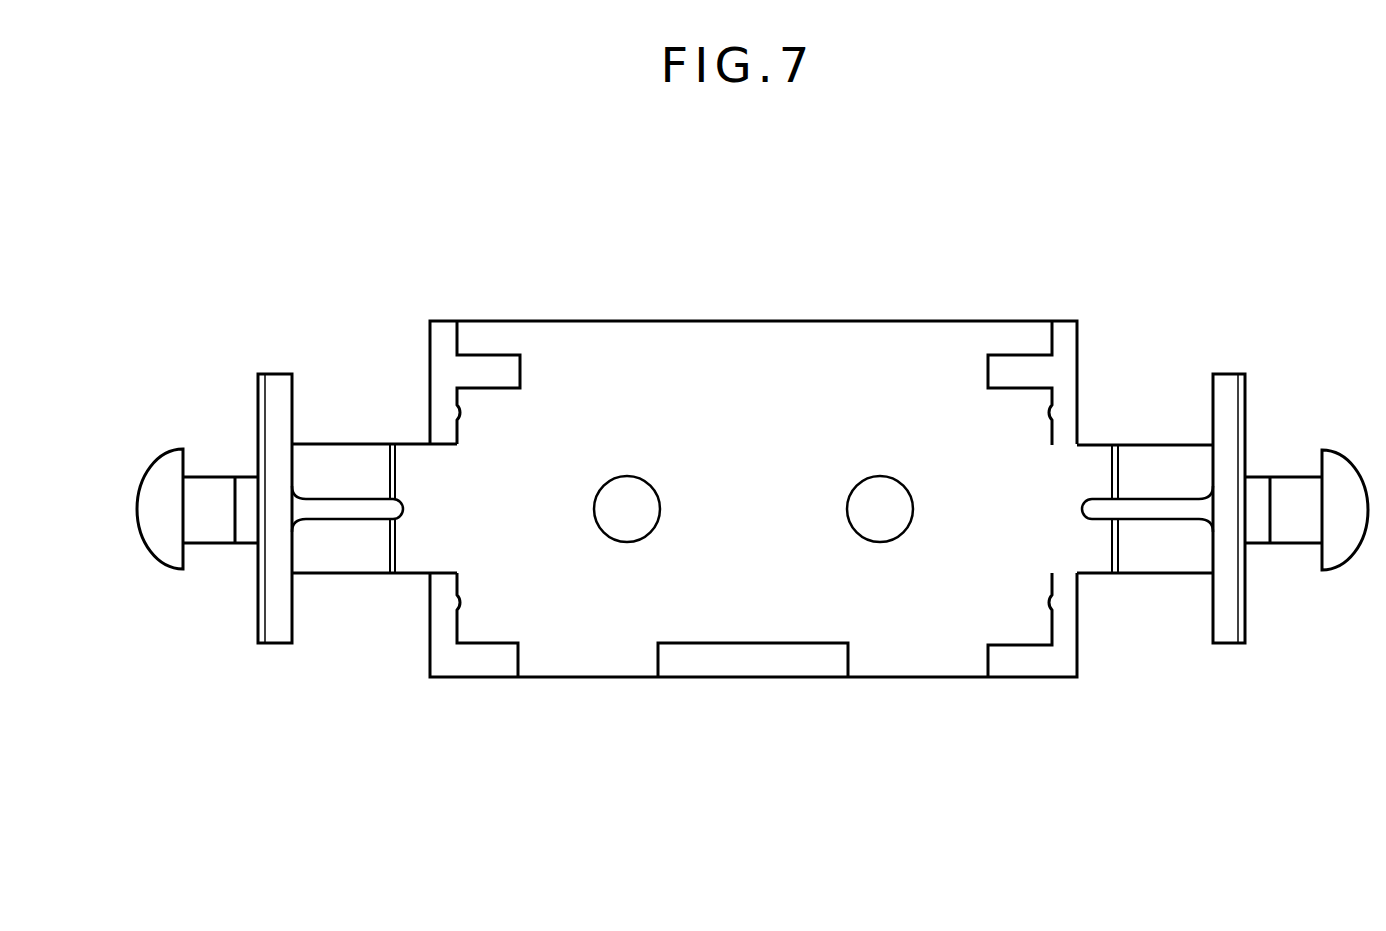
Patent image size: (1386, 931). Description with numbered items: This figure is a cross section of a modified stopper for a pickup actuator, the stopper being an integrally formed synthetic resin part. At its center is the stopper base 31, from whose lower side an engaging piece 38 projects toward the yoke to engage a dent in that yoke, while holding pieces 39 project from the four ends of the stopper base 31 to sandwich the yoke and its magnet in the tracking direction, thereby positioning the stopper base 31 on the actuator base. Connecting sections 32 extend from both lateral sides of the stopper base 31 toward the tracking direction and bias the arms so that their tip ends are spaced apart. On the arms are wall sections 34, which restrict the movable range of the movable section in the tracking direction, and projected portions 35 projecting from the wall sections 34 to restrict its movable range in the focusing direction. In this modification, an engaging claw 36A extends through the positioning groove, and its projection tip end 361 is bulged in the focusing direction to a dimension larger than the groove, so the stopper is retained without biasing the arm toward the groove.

The stopper base 31 is at (702, 335).
The connecting section 32 is at (327, 453).
The wall section 34 is at (292, 618).
The projected portion 35 is at (347, 508).
The engaging claw 36A is at (243, 532).
The projection tip end 361 is at (148, 508).
The engaging piece 38 is at (752, 667).
The holding piece 39 is at (487, 367).